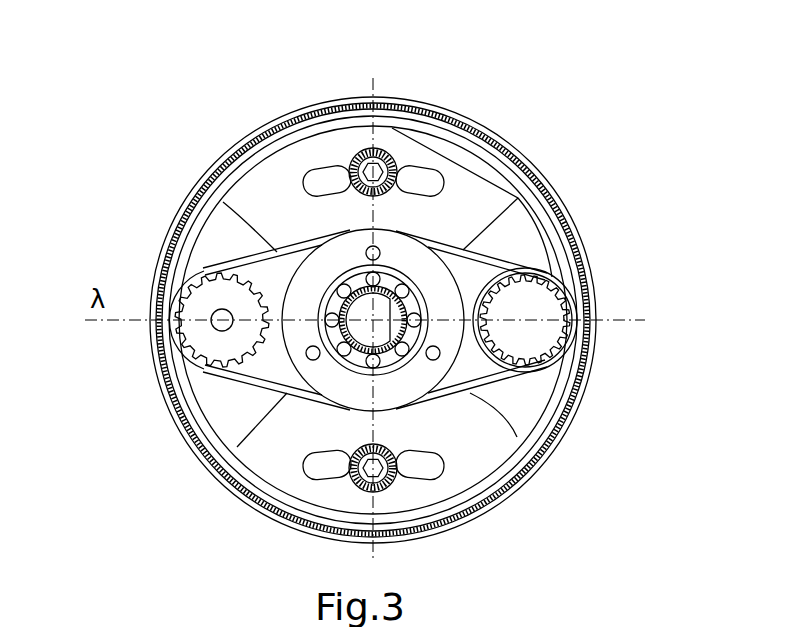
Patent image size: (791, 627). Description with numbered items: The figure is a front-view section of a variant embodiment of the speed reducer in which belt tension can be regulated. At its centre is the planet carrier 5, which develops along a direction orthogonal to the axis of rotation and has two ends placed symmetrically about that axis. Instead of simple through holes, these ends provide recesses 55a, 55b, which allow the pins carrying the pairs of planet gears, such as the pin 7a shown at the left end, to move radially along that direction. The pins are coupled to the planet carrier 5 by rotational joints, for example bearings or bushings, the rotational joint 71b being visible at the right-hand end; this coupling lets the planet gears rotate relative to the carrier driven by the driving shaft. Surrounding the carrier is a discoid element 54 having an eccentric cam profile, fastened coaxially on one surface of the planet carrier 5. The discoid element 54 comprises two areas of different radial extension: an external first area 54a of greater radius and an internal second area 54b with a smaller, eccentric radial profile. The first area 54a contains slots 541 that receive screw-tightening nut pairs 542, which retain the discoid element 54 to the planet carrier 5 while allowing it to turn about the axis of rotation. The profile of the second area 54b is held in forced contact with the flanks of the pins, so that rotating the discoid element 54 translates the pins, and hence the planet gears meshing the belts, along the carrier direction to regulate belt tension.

The planet carrier 5 is at (222, 240).
The pin 7a is at (215, 316).
The discoid element 54 is at (245, 207).
The first area 54a is at (327, 152).
The second area 54b is at (467, 280).
The slots 541 is at (428, 183).
The screw-tightening nut pair 542 is at (387, 167).
The recess 55a is at (178, 362).
The recess 55b is at (563, 363).
The rotational joint 71b is at (510, 380).